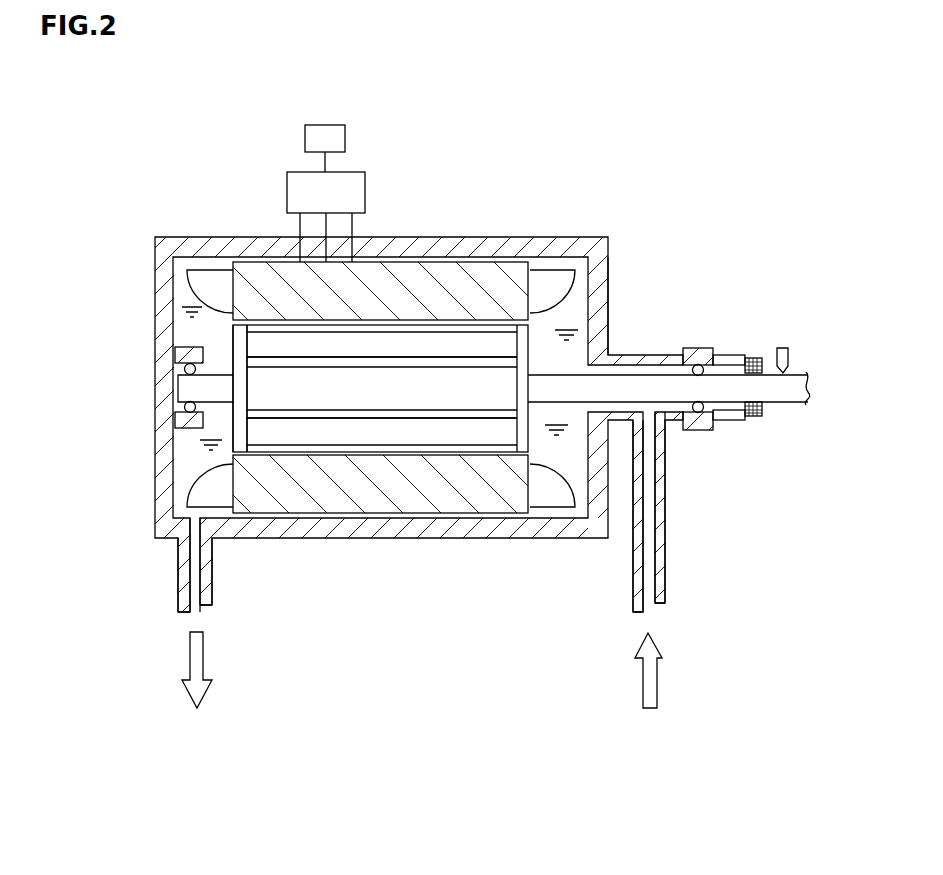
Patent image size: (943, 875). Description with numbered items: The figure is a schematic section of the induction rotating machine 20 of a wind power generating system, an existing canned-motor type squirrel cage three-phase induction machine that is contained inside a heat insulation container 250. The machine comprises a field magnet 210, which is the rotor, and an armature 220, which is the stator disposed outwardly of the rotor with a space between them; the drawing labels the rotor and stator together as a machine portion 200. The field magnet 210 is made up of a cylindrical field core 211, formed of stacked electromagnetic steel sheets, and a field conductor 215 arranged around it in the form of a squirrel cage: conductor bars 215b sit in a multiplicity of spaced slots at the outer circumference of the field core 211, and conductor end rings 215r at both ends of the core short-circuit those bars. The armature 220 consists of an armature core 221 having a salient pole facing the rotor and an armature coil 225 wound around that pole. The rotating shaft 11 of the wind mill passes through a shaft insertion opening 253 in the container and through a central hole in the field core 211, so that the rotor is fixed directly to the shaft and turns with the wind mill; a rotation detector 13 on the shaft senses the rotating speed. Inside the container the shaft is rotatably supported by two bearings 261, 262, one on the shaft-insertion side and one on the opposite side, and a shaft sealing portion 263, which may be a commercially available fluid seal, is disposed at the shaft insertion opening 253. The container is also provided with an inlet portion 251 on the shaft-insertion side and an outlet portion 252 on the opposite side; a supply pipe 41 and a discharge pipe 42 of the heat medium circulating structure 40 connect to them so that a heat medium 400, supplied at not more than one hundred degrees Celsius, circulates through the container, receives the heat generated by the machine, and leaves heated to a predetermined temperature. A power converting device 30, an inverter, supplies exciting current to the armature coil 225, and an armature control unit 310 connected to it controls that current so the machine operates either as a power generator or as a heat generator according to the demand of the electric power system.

The rotating shaft 11 is at (780, 394).
The rotation detector 13 is at (783, 348).
The induction rotating machine 20 is at (608, 297).
The power converting device 30 is at (363, 188).
The armature control unit 310 is at (345, 143).
The heat medium circulating structure 40 is at (474, 639).
The supply pipe 41 is at (665, 578).
The discharge pipe 42 is at (212, 590).
The rotating electric machine 200 is at (331, 439).
The field magnet 210 is at (306, 363).
The field core 211 is at (405, 383).
The field conductor 215 is at (465, 356).
The conductor bars 215b is at (313, 362).
The conductor end rings 215r is at (240, 342).
The armature 220 is at (391, 407).
The armature core 221 is at (495, 514).
The armature coil 225 is at (552, 280).
The heat insulation container 250 is at (217, 252).
The inlet portion 251 is at (665, 457).
The outlet portion 252 is at (178, 553).
The shaft insertion opening 253 is at (737, 417).
The bearing 261 is at (698, 348).
The bearing 262 is at (184, 372).
The shaft sealing portion 263 is at (752, 358).
The heat medium 400 is at (187, 462).